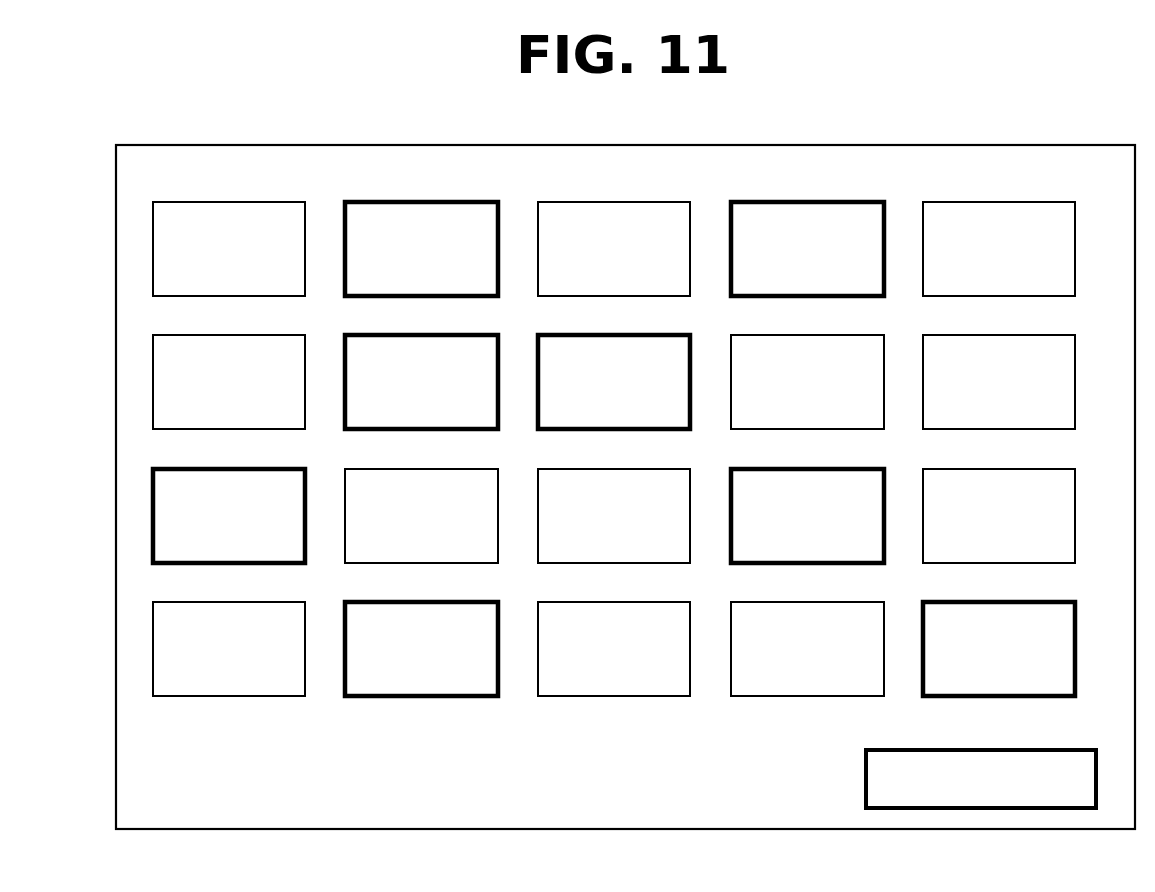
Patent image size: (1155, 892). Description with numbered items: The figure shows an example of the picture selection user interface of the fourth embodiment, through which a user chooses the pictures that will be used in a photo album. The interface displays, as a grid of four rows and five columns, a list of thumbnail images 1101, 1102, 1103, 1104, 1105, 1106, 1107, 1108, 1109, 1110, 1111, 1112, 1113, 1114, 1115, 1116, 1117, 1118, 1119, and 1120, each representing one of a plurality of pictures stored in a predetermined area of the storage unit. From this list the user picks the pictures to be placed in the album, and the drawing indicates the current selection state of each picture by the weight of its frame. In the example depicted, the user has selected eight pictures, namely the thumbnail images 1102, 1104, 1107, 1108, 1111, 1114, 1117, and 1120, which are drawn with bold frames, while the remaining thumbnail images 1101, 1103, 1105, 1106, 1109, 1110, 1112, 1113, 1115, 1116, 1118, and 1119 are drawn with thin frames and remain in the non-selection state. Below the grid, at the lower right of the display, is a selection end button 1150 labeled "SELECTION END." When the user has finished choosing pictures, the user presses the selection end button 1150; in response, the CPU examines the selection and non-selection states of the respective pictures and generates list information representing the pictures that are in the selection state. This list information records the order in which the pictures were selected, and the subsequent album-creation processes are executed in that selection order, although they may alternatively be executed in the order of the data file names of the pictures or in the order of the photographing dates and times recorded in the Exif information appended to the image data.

The thumbnail image 1101 is at (221, 202).
The thumbnail image 1102 is at (413, 202).
The thumbnail image 1103 is at (606, 202).
The thumbnail image 1104 is at (799, 202).
The thumbnail image 1105 is at (991, 202).
The thumbnail image 1106 is at (221, 335).
The thumbnail image 1107 is at (413, 335).
The thumbnail image 1108 is at (606, 335).
The thumbnail image 1109 is at (799, 335).
The thumbnail image 1110 is at (991, 335).
The thumbnail image 1111 is at (221, 469).
The thumbnail image 1112 is at (413, 469).
The thumbnail image 1113 is at (606, 469).
The thumbnail image 1114 is at (799, 469).
The thumbnail image 1115 is at (991, 469).
The thumbnail image 1116 is at (221, 602).
The thumbnail image 1117 is at (413, 602).
The thumbnail image 1118 is at (606, 602).
The thumbnail image 1119 is at (799, 602).
The thumbnail image 1120 is at (991, 602).
The selection end button 1150 is at (865, 780).